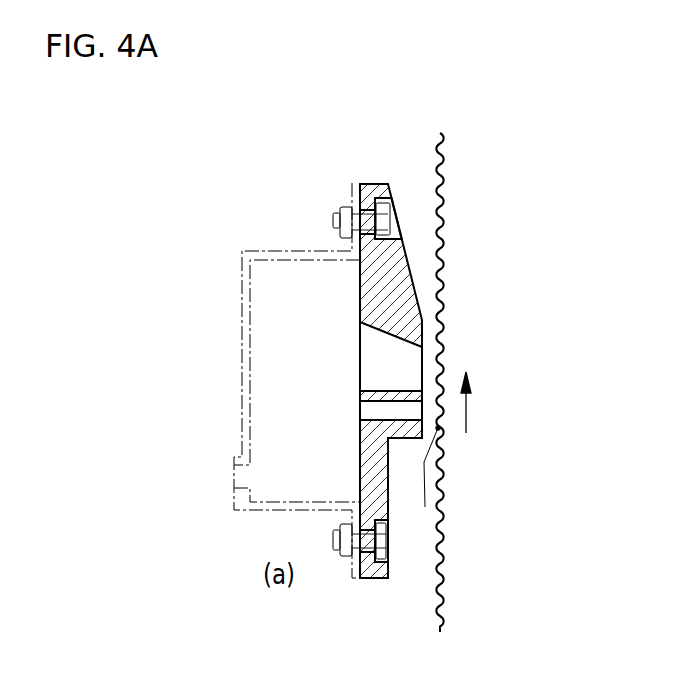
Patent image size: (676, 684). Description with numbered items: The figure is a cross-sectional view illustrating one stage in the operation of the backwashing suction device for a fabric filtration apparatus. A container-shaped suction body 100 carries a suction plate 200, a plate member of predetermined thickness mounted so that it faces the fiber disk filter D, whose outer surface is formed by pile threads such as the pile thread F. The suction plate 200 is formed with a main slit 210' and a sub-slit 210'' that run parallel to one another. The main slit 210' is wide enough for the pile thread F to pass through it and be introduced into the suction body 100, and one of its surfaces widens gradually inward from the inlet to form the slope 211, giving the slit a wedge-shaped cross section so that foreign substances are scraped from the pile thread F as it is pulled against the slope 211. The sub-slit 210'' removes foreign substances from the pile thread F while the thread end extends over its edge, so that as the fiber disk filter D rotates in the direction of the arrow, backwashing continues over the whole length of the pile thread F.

The suction body 100 is at (247, 368).
The suction plate 200 is at (395, 269).
The slope 211 is at (380, 330).
The main slit 210' is at (297, 355).
The sub-slit 210'' is at (294, 416).
The fiber disk filter D is at (478, 186).
The pile thread F is at (428, 472).